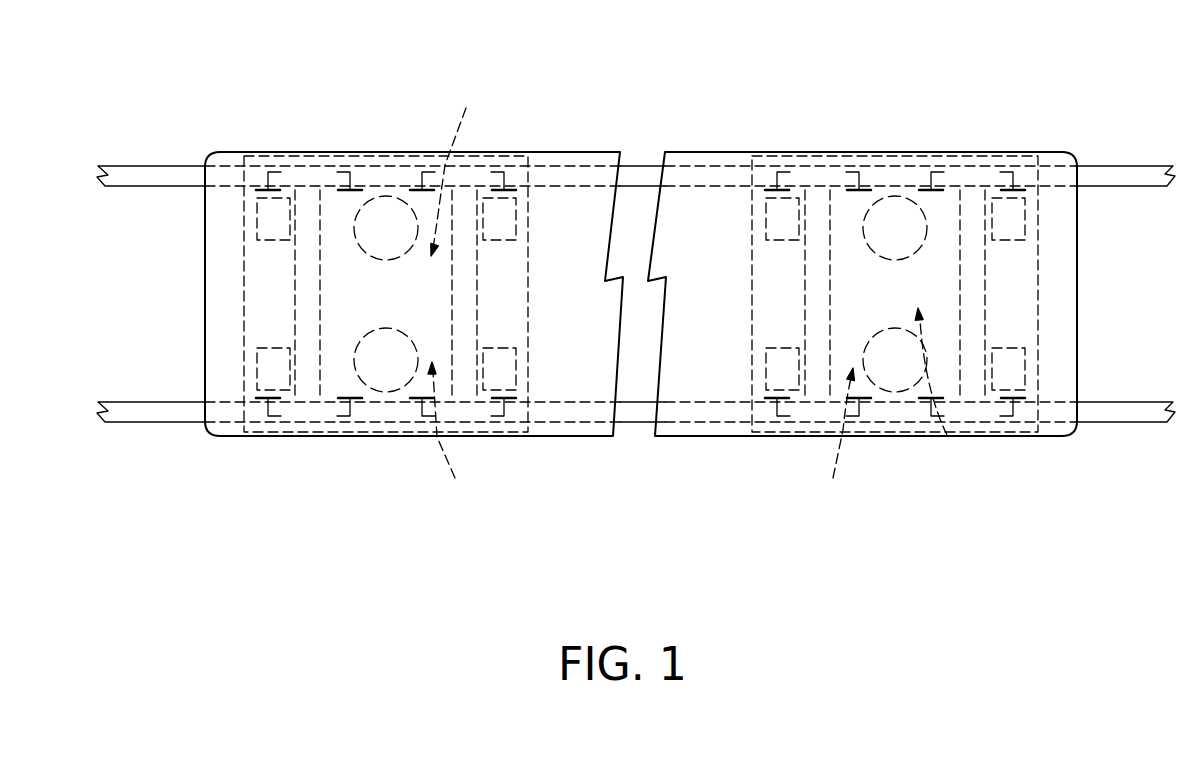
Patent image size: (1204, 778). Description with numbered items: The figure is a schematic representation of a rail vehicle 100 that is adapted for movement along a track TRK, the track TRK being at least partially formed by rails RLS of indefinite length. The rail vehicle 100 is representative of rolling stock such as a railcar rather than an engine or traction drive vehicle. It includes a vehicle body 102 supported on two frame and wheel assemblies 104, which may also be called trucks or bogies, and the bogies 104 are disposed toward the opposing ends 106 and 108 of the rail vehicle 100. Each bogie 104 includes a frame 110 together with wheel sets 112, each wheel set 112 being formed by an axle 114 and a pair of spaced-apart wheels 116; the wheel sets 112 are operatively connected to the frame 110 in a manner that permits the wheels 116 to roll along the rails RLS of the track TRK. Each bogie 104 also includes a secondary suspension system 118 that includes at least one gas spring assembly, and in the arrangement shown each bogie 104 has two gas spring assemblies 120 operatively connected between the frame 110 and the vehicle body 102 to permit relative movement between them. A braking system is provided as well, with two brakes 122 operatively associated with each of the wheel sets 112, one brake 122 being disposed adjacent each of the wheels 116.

The rail vehicle 100 is at (935, 96).
The vehicle body 102 is at (687, 151).
The frame and wheel assembly 104 is at (641, 432).
The first end 106 is at (233, 119).
The second end 108 is at (1085, 146).
The frame 110 is at (203, 435).
The wheel set 112 is at (295, 262).
The axle 114 is at (295, 303).
The wheel 116 is at (296, 170).
The secondary suspension system 118 is at (963, 470).
The gas spring assembly 120 is at (385, 196).
The brake 122 is at (257, 222).
The rails RLS is at (150, 165).
The track TRK is at (88, 450).